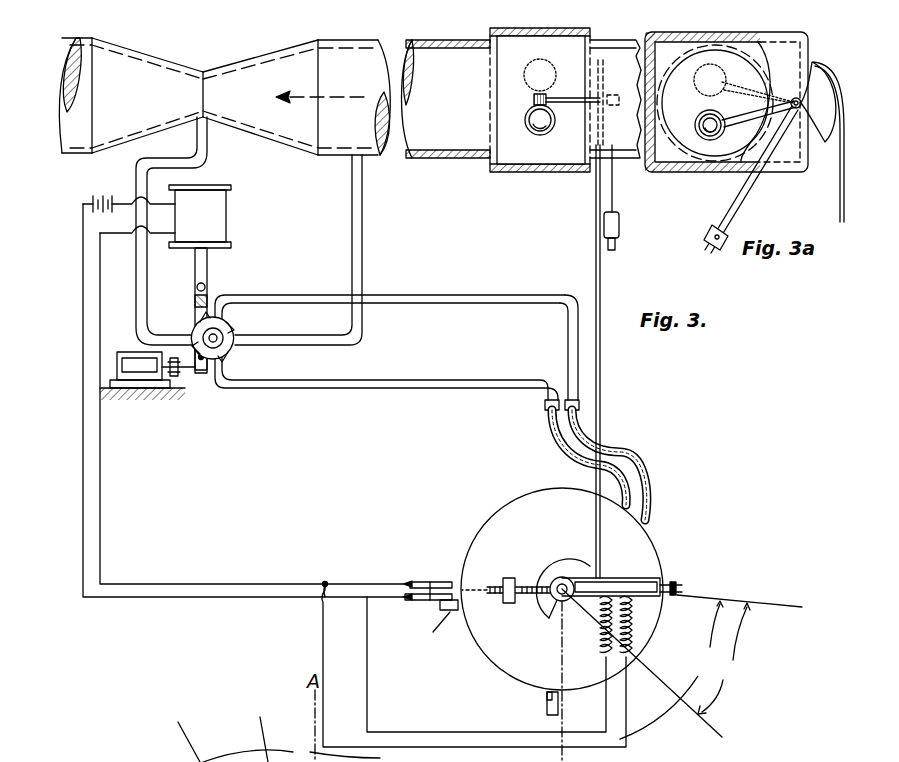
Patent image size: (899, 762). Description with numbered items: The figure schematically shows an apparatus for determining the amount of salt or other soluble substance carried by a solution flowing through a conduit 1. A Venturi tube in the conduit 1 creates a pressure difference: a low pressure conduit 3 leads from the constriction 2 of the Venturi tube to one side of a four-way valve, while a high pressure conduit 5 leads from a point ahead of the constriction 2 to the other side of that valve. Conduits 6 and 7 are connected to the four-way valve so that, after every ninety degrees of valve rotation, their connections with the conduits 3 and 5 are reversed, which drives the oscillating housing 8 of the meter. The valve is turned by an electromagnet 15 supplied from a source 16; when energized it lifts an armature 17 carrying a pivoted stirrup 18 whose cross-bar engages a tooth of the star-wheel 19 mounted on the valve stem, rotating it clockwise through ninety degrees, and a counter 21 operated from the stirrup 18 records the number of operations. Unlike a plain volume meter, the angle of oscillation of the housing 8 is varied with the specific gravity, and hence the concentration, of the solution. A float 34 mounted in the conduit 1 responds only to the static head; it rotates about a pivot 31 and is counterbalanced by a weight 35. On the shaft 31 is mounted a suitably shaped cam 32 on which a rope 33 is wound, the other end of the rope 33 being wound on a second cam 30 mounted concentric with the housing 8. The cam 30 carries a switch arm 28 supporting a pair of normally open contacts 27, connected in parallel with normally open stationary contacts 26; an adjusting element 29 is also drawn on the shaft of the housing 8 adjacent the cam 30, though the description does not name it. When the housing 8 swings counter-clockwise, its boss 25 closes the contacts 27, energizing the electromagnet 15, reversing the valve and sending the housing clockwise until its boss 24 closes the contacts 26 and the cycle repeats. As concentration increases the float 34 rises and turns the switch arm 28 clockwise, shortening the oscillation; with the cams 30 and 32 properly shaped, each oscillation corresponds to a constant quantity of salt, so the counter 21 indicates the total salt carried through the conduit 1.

In FIG. 3, the conduit 1 is at (345, 130).
In FIG. 3, the constriction 2 is at (203, 70).
In FIG. 3, the low pressure conduit 3 is at (208, 147).
In FIG. 3, the high pressure conduit 5 is at (363, 210).
In FIG. 3, the conduit 6 is at (500, 380).
In FIG. 3, the conduit 7 is at (522, 295).
In FIG. 3, the housing 8 is at (637, 540).
In FIG. 3, the electromagnet 15 is at (218, 217).
In FIG. 3, the source 16 is at (118, 182).
In FIG. 3, the armature 17 is at (206, 266).
In FIG. 3, the pivoted stirrup 18 is at (207, 300).
In FIG. 3, the star-wheel 19 is at (234, 332).
In FIG. 3, the counter 21 is at (125, 352).
In FIG. 3, the boss 24 is at (440, 623).
In FIG. 3, the boss 25 is at (546, 704).
In FIG. 3, the stationary contacts 26 is at (450, 580).
In FIG. 3, the contacts 27 is at (682, 584).
In FIG. 3, the switch arm 28 is at (648, 578).
In FIG. 3, the nut 29 is at (513, 578).
In FIG. 3, the cam 30 is at (566, 566).
In FIG. 3, the pivot 31 is at (582, 98).
In FIG. 3A, the pivot 31 is at (795, 98).
In FIG. 3, the cam 32 is at (601, 62).
In FIG. 3A, the cam 32 is at (823, 141).
In FIG. 3, the rope 33 is at (604, 222).
In FIG. 3A, the rope 33 is at (839, 199).
In FIG. 3, the float 34 is at (531, 118).
In FIG. 3A, the float 34 is at (703, 121).
In FIG. 3A, the weight 35 is at (708, 231).